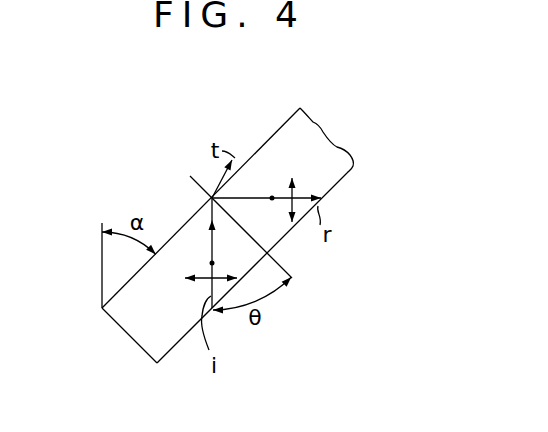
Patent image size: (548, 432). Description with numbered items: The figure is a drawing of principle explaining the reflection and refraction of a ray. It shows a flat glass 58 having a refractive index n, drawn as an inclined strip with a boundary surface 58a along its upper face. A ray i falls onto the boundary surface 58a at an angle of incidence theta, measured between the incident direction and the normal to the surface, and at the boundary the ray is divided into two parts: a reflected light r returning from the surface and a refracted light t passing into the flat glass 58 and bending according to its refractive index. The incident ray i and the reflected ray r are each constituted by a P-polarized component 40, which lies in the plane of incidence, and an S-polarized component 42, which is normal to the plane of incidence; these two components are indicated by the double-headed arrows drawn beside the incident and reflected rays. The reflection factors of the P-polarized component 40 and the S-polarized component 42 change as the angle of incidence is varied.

The flat glass 58 is at (343, 179).
The boundary surface 58a is at (280, 132).
The P-polarized component 40 is at (200, 277).
The S-polarized component 42 is at (210, 263).